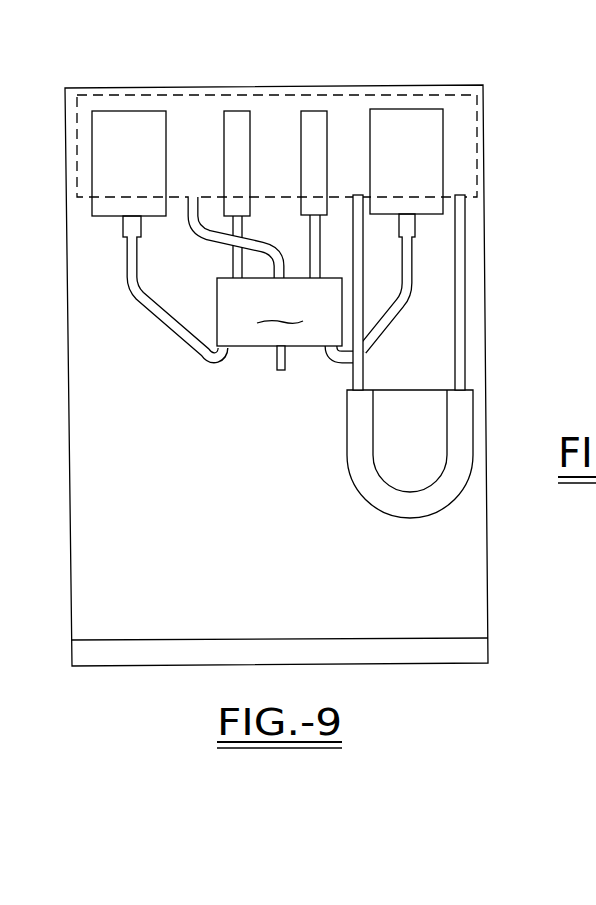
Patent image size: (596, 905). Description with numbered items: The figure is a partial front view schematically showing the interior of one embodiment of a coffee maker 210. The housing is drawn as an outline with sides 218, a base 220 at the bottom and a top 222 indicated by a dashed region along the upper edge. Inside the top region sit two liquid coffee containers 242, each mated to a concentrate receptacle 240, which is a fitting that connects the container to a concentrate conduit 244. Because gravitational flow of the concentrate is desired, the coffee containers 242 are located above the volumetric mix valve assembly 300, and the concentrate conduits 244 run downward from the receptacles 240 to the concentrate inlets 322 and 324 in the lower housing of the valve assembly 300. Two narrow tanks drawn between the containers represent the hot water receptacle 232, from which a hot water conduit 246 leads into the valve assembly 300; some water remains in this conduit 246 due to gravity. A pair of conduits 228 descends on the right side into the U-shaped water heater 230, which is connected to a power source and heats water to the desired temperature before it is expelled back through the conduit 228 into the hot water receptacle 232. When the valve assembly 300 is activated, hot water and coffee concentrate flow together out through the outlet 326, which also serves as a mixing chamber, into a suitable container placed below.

The coffee maker 210 is at (491, 132).
The sides 218 is at (68, 422).
The base 220 is at (425, 663).
The top 222 is at (183, 87).
The conduit 228 is at (466, 278).
The water heater 230 is at (400, 518).
The hot water receptacle 232 is at (283, 96).
The concentrate receptacle 240 is at (125, 230).
The liquid coffee container 242 is at (147, 112).
The concentrate conduit 244 is at (160, 323).
The hot water conduit 246 is at (211, 240).
The volumetric mix valve assembly 300 is at (279, 312).
The concentrate inlet 322 is at (228, 360).
The concentrate inlet 324 is at (334, 363).
The outlet 326 is at (279, 372).